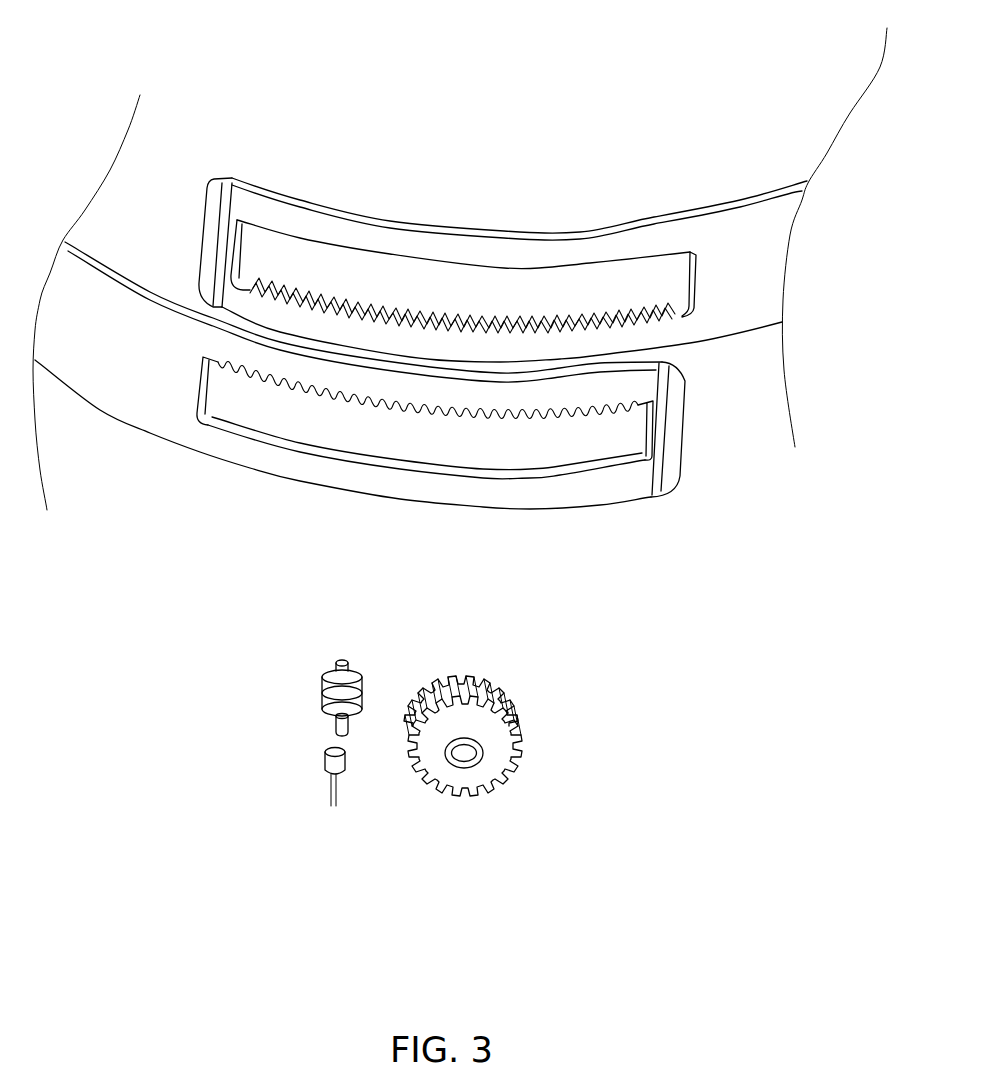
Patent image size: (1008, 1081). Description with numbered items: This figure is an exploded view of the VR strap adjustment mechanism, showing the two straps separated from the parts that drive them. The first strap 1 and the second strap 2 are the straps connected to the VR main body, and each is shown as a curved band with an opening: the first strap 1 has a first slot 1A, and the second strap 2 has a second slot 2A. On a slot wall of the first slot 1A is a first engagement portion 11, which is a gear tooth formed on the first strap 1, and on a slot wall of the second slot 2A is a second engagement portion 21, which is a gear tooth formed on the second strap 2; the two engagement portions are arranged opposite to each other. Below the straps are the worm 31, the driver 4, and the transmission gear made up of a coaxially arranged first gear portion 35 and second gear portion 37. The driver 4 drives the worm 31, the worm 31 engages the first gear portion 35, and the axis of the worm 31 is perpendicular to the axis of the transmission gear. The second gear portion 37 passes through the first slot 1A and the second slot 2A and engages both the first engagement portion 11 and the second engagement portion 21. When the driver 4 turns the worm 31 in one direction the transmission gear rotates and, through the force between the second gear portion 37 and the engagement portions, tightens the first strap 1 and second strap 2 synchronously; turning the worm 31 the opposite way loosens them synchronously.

The first strap 1 is at (731, 263).
The first slot 1A is at (588, 294).
The first engagement portion 11 is at (399, 318).
The second strap 2 is at (122, 303).
The second slot 2A is at (245, 425).
The second engagement portion 21 is at (444, 420).
The worm 31 is at (320, 697).
The driver 4 is at (332, 806).
The first gear portion 35 is at (495, 763).
The second gear portion 37 is at (490, 683).